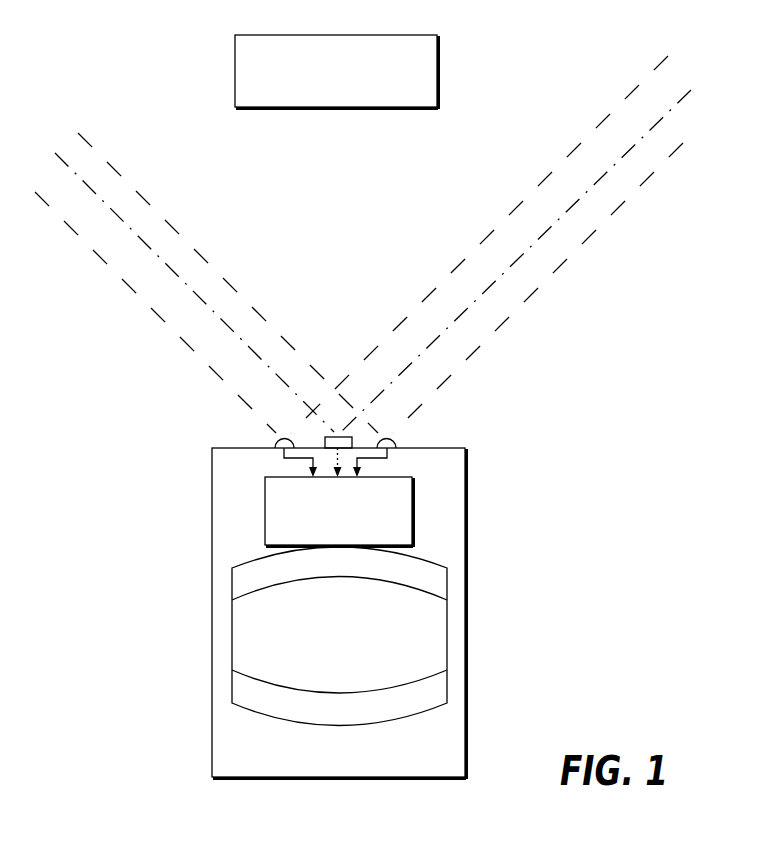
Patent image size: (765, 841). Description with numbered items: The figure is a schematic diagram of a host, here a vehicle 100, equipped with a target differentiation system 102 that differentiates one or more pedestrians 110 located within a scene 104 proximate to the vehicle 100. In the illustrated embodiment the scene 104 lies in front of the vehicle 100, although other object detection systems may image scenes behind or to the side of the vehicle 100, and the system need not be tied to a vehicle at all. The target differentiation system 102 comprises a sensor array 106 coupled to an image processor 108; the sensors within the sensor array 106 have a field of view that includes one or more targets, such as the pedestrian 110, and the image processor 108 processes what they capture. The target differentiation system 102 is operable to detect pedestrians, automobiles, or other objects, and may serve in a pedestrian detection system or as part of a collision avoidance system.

The vehicle 100 is at (468, 542).
The target differentiation system 102 is at (414, 436).
The scene 104 is at (614, 50).
The sensor array 106 is at (258, 438).
The image processor 108 is at (412, 495).
The pedestrian 110 is at (377, 108).